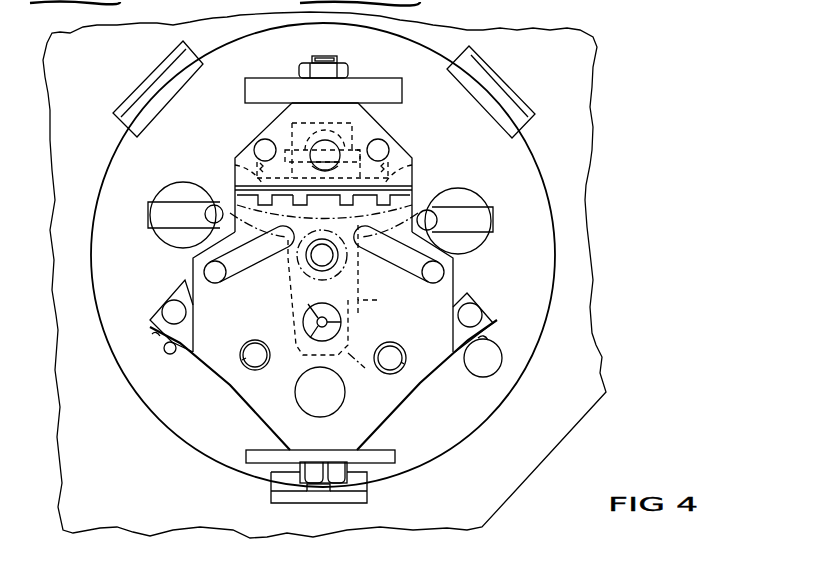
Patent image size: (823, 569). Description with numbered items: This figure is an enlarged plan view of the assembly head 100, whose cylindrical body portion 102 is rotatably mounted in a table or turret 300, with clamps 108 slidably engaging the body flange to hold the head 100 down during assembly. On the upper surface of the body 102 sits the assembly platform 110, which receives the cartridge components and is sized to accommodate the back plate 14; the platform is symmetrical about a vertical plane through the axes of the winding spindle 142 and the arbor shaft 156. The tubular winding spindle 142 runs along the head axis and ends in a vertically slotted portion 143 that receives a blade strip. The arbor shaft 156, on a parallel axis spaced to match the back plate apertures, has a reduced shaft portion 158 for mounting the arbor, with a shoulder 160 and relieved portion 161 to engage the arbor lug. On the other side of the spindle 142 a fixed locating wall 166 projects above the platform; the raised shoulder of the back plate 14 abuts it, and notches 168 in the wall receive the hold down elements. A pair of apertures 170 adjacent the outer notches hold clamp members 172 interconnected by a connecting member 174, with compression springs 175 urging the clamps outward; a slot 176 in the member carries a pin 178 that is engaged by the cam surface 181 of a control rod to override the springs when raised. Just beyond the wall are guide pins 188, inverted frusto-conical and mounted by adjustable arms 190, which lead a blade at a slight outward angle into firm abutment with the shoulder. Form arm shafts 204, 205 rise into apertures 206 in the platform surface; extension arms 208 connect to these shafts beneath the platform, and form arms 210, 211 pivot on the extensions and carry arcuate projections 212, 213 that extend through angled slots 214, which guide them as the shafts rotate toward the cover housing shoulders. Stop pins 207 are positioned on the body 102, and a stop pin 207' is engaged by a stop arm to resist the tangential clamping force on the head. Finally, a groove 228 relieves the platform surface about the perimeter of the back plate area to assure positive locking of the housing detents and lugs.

The head 100 is at (373, 255).
The cylindrical body portion 102 is at (434, 449).
The clamps 108 is at (138, 97).
The assembly platform 110 is at (364, 434).
The back plate 14 is at (358, 352).
The winding spindle 142 is at (303, 265).
The vertically slotted portion 143 is at (312, 256).
The arbor shaft 156 is at (299, 379).
The reduced shaft portion 158 is at (338, 290).
The shoulder 160 is at (304, 315).
The relieved portion 161 is at (317, 323).
The locating wall 166 is at (360, 199).
The notches 168 is at (231, 198).
The apertures 170 is at (323, 210).
The clamp members 172 is at (240, 162).
The connecting member 174 is at (386, 141).
The compression springs 175 is at (247, 150).
The slot 176 is at (280, 115).
The pin 178 is at (318, 160).
The cam surface 181 is at (328, 162).
The guide pins 188 is at (208, 208).
The arms 190 is at (192, 225).
The form arm shaft 204 is at (251, 364).
The form arm shaft 205 is at (395, 362).
The apertures 206 is at (243, 360).
The stop pins 207 is at (179, 365).
The stop pin 207' is at (521, 358).
The extension arms 208 is at (158, 339).
The form arm 210 is at (180, 291).
The form arm 211 is at (462, 294).
The arcuate projection 212 is at (205, 268).
The arcuate projection 213 is at (444, 273).
The slots 214 is at (235, 277).
The groove 228 is at (381, 313).
The table or turret 300 is at (578, 402).